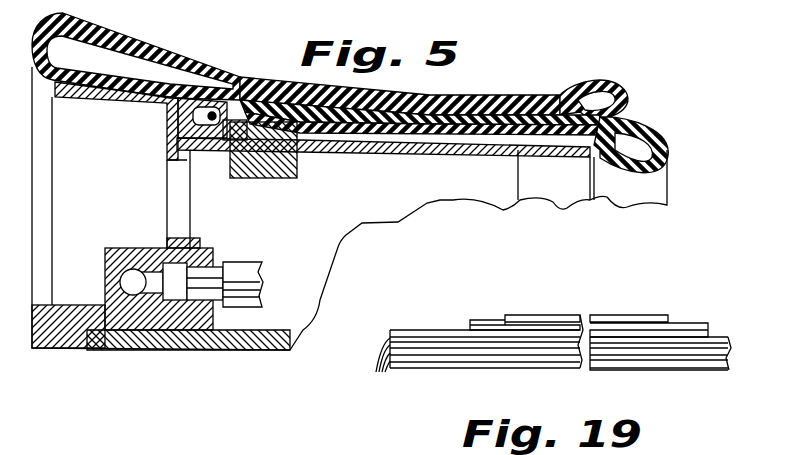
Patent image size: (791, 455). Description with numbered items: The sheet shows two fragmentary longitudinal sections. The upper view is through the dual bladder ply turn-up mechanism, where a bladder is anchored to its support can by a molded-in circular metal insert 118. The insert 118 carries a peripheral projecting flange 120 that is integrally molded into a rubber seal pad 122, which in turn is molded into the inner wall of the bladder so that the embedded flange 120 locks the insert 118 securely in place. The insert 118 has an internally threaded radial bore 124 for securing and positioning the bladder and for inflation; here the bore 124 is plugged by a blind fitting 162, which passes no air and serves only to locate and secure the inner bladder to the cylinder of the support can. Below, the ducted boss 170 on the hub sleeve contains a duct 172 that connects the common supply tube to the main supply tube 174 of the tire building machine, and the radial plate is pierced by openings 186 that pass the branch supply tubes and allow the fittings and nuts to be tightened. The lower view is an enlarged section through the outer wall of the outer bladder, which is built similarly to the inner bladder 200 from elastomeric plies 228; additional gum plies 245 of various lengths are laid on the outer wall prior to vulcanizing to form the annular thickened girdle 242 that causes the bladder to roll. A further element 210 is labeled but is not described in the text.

In FIG. 5, the circular metal insert 118 is at (233, 155).
In FIG. 5, the peripheral projecting flange 120 is at (250, 115).
In FIG. 5, the rubber seal pad 122 is at (227, 97).
In FIG. 5, the internally threaded radial bore 124 is at (298, 150).
In FIG. 5, the blind fitting 162 is at (255, 172).
In FIG. 5, the ducted boss 170 is at (122, 257).
In FIG. 5, the duct 172 is at (133, 282).
In FIG. 5, the main supply tube 174 is at (262, 280).
In FIG. 5, the opening 186 is at (167, 160).
In FIG. 19, the inner bladder 200 is at (378, 454).
In FIG. 19, the member 210 is at (181, 448).
In FIG. 19, the elastomeric plies 228 is at (459, 353).
In FIG. 19, the girdle 242 is at (621, 313).
In FIG. 19, the gum plies 245 is at (505, 316).